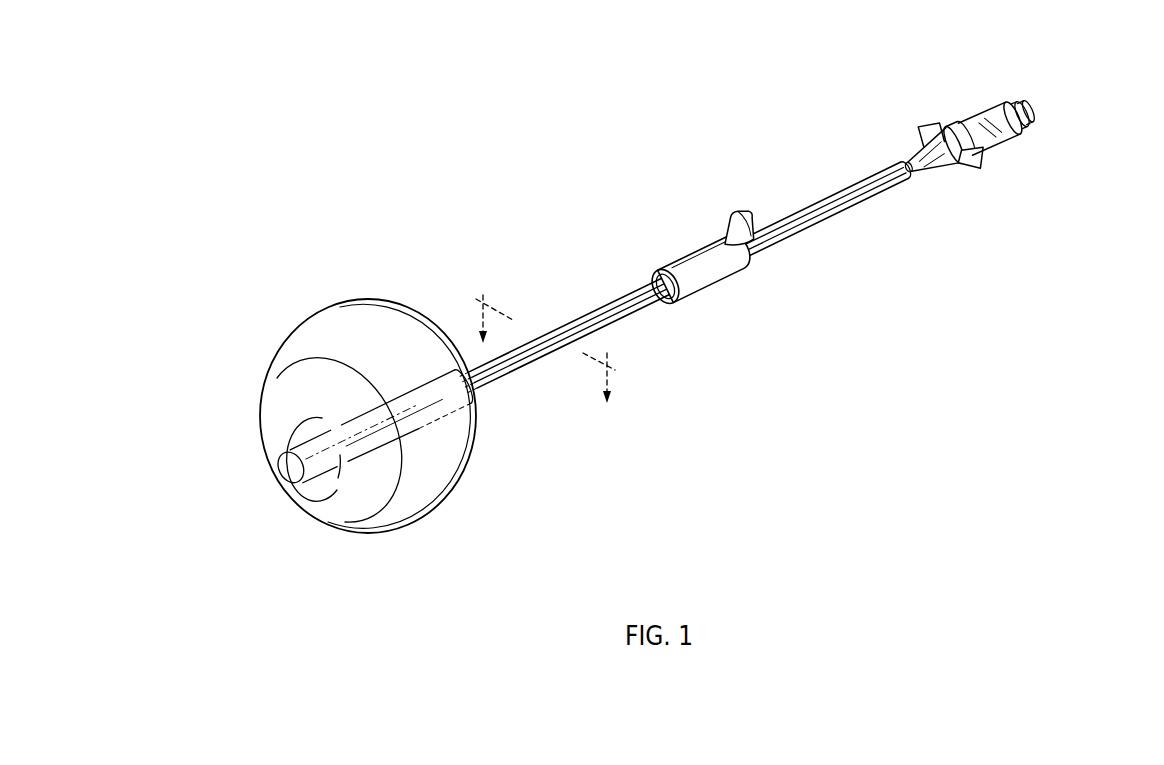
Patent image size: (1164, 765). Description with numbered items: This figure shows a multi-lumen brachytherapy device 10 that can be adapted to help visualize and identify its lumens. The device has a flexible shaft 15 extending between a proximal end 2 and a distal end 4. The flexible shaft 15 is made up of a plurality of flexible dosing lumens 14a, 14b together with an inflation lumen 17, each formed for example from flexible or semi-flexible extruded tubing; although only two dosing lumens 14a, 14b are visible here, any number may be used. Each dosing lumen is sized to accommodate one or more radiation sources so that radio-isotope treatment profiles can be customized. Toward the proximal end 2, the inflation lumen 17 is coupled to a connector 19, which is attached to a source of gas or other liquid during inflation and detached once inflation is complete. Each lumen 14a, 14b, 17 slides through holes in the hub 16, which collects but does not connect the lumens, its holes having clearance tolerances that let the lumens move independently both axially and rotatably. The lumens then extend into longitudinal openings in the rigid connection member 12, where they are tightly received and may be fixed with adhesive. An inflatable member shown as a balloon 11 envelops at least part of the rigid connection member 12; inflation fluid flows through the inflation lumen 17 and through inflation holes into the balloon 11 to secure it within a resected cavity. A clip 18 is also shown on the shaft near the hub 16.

The brachytherapy device 10 is at (355, 108).
The proximal end 2 is at (1042, 104).
The distal end 4 is at (263, 481).
The balloon 11 is at (313, 312).
The rigid connection member 12 is at (417, 425).
The dosing lumen 14a is at (845, 184).
The dosing lumen 14b is at (793, 235).
The flexible shaft 15 is at (527, 267).
The hub 16 is at (693, 254).
The inflation lumen 17 is at (907, 172).
The clip 18 is at (759, 198).
The connector 19 is at (1020, 100).